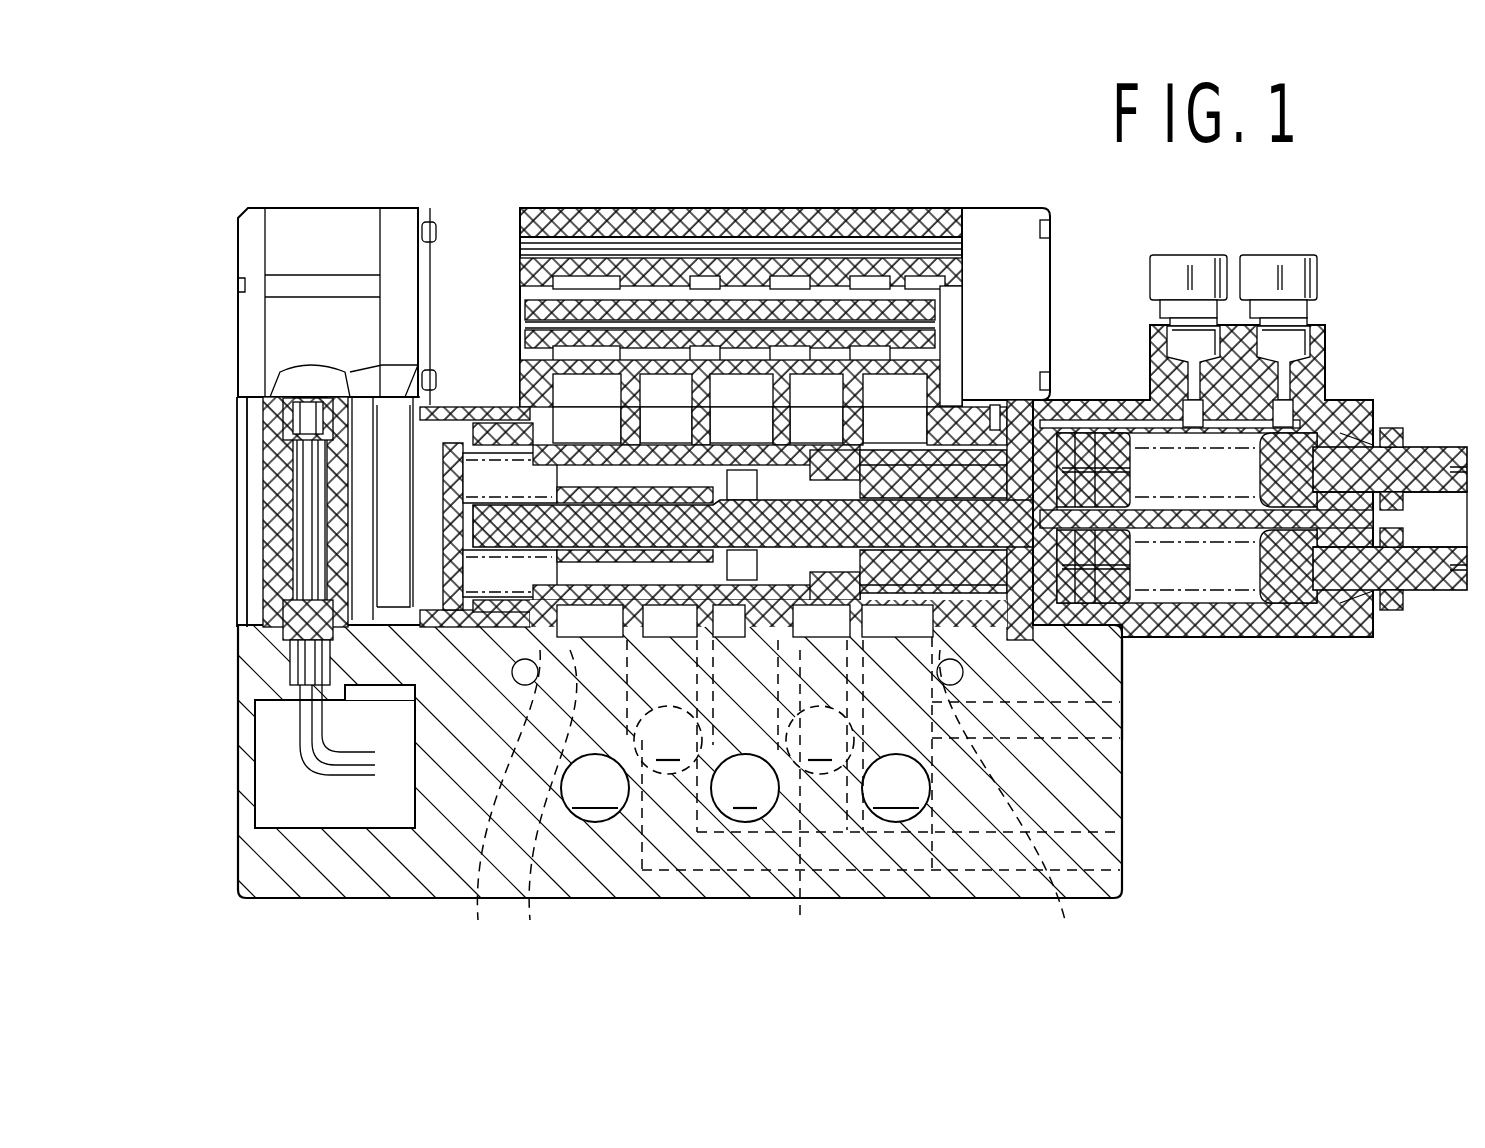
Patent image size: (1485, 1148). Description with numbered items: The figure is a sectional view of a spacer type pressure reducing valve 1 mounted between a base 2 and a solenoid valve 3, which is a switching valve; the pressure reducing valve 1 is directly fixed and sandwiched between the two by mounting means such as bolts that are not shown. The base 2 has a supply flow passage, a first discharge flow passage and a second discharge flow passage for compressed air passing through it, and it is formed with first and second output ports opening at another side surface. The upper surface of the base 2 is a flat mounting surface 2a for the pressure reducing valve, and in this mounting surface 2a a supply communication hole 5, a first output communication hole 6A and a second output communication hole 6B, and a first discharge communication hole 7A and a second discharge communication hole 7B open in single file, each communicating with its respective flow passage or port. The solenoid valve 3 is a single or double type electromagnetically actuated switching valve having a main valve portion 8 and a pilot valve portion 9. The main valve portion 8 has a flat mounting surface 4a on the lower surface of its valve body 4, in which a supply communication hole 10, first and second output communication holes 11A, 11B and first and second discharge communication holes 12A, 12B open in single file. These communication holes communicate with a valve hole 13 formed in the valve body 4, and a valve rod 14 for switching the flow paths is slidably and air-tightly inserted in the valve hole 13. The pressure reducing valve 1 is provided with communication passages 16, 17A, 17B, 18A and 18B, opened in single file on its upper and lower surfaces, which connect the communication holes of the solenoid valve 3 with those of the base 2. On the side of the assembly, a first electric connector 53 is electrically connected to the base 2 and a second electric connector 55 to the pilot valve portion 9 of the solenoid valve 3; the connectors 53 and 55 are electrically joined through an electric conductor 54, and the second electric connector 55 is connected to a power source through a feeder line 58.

The spacer type pressure reducing valve 1 is at (1358, 334).
The base 2 is at (895, 905).
The mounting surface 2a is at (1115, 665).
The solenoid valve 3 is at (785, 261).
The valve body 4 is at (762, 208).
The mounting surface 4a is at (995, 410).
The supply communication hole 5 is at (700, 835).
The first output communication hole 6A is at (571, 799).
The second output communication hole 6B is at (797, 804).
The first discharge communication hole 7A is at (499, 804).
The second discharge communication hole 7B is at (1014, 804).
The main valve portion 8 is at (820, 197).
The pilot valve portion 9 is at (372, 202).
The supply communication hole 10 is at (741, 408).
The first output communication hole 11A is at (670, 408).
The second output communication hole 11B is at (820, 408).
The first discharge communication hole 12A is at (587, 408).
The second discharge communication hole 12B is at (895, 408).
The valve hole 13 is at (630, 290).
The valve rod 14 is at (892, 300).
The communication passage 16 is at (731, 622).
The communication passage 17A is at (673, 622).
The communication passage 17B is at (823, 622).
The communication passage 18A is at (590, 622).
The communication passage 18B is at (897, 622).
The first electric connector 53 is at (285, 405).
The electric conductor 54 is at (265, 520).
The second electric connector 55 is at (283, 655).
The feeder line 58 is at (300, 745).